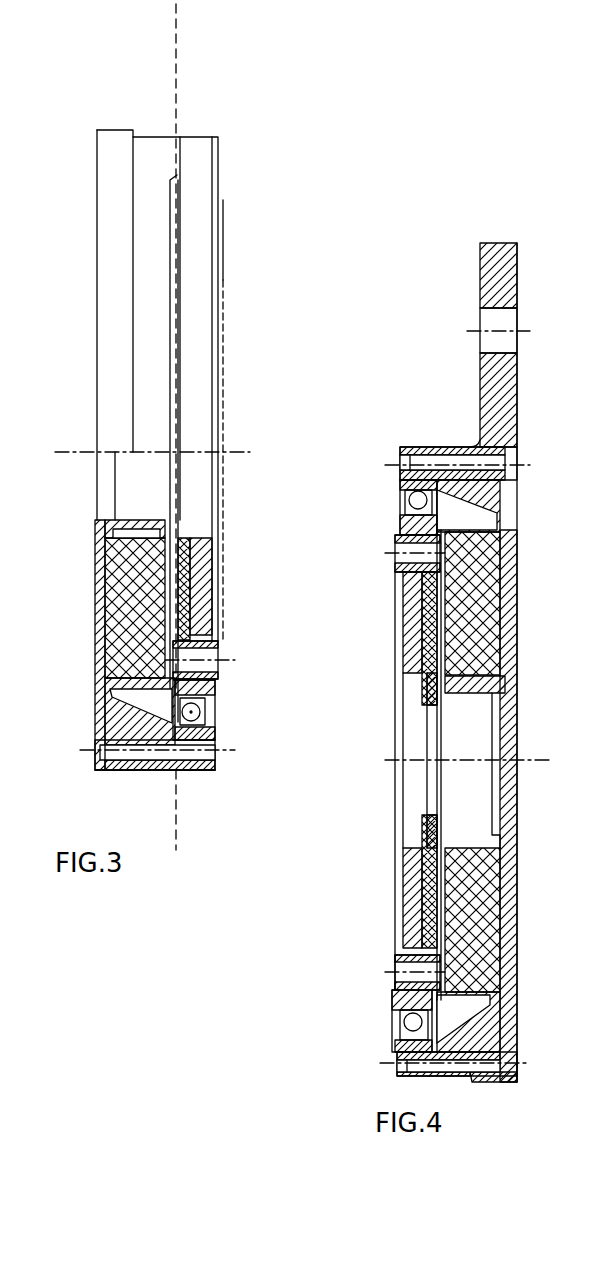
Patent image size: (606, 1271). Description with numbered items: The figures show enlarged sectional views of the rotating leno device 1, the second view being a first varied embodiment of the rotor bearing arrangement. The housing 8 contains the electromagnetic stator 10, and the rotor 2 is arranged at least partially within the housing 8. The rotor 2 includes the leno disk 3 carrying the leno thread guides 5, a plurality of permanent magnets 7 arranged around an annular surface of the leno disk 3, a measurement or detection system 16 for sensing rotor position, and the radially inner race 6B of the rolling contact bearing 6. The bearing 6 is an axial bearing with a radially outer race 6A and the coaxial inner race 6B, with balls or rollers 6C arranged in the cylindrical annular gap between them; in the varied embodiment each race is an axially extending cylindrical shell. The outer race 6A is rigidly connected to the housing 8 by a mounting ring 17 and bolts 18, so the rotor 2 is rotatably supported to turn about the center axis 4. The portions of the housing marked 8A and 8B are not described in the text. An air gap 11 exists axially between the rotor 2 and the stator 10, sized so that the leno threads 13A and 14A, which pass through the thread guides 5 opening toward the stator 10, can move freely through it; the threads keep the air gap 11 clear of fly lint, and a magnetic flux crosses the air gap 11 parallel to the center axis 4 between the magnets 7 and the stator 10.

In FIG. 4, the rotating leno device 1 is at (355, 436).
In FIG. 3, the rotor 2 is at (245, 580).
In FIG. 4, the rotor 2 is at (360, 636).
In FIG. 3, the leno disk 3 is at (216, 642).
In FIG. 4, the leno disk 3 is at (396, 588).
In FIG. 3, the center axis 4 is at (78, 452).
In FIG. 4, the center axis 4 is at (520, 764).
In FIG. 3, the leno thread guides 5 is at (216, 662).
In FIG. 4, the leno thread guides 5 is at (442, 553).
In FIG. 3, the rolling contact bearing 6 is at (96, 770).
In FIG. 4, the rolling contact bearing 6 is at (357, 1034).
In FIG. 3, the radially outer bearing race 6A is at (215, 757).
In FIG. 4, the radially outer bearing race 6A is at (400, 484).
In FIG. 3, the radially inner bearing race 6B is at (212, 700).
In FIG. 4, the radially inner bearing race 6B is at (398, 516).
In FIG. 3, the balls or rollers 6C is at (208, 735).
In FIG. 3, the permanent magnets 7 is at (196, 566).
In FIG. 4, the permanent magnets 7 is at (437, 625).
In FIG. 3, the housing 8 is at (110, 728).
In FIG. 4, the housing 8 is at (495, 1033).
In FIG. 4, the housing flange 8A is at (498, 266).
In FIG. 4, the housing slot 8B is at (500, 322).
In FIG. 3, the stator 10 is at (118, 669).
In FIG. 4, the stator 10 is at (518, 535).
In FIG. 3, the air gap 11 is at (105, 575).
In FIG. 4, the air gap 11 is at (425, 742).
In FIG. 3, the leno thread 13A is at (178, 72).
In FIG. 3, the leno thread 14A is at (178, 8).
In FIG. 3, the measurement or detection system 16 is at (158, 520).
In FIG. 4, the measurement or detection system 16 is at (428, 702).
In FIG. 3, the mounting ring 17 is at (190, 770).
In FIG. 4, the mounting ring 17 is at (397, 1074).
In FIG. 3, the screws or bolts 18 is at (96, 750).
In FIG. 4, the screws or bolts 18 is at (490, 458).